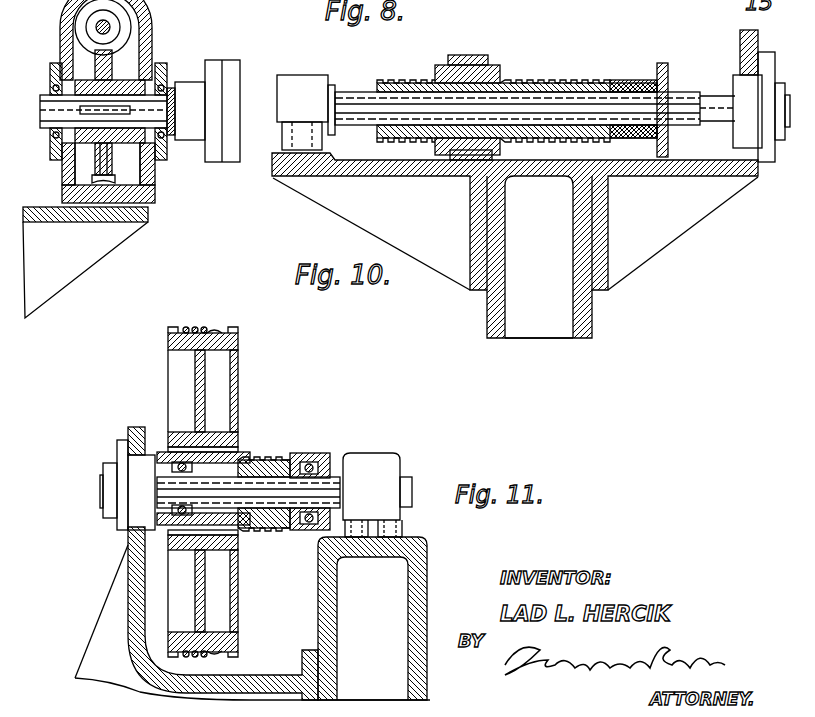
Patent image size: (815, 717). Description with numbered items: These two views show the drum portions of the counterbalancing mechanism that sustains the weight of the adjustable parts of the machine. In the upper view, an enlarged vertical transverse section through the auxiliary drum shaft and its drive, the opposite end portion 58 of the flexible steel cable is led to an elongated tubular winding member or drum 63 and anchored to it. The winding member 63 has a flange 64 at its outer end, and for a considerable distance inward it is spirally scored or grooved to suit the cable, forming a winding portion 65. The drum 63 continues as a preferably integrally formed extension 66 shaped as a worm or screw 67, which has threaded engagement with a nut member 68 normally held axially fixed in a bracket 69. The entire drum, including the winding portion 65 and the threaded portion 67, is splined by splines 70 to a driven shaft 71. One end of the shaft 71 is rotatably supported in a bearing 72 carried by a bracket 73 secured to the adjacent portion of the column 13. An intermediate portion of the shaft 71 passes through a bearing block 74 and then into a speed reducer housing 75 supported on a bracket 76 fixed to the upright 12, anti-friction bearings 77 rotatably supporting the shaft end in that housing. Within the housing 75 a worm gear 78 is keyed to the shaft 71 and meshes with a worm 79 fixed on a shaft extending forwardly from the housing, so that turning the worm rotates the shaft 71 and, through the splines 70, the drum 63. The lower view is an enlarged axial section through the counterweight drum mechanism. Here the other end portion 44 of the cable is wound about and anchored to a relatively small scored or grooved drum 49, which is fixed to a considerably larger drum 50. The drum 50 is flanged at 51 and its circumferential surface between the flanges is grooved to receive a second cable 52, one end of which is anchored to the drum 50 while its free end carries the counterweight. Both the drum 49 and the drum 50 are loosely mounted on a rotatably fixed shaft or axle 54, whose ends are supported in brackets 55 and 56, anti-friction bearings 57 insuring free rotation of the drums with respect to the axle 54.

In FIG. 10, the column 13 is at (597, 327).
In FIG. 11, the upright 12 is at (427, 682).
In FIG. 11, the end portion of the cable 44 is at (248, 458).
In FIG. 11, the scored or grooved drum 49 is at (270, 458).
In FIG. 11, the drum 50 is at (240, 343).
In FIG. 11, the flanges 51 is at (170, 327).
In FIG. 11, the second cable 52 is at (198, 327).
In FIG. 11, the shaft or axle 54 is at (100, 485).
In FIG. 11, the bracket 55 is at (128, 571).
In FIG. 11, the bracket 56 is at (390, 456).
In FIG. 11, the anti-friction bearings 57 is at (180, 462).
In FIG. 10, the opposite end portion of the cable 58 is at (632, 78).
In FIG. 10, the tubular winding member or drum 63 is at (592, 78).
In FIG. 10, the flange 64 is at (662, 63).
In FIG. 10, the winding portion 65 is at (560, 80).
In FIG. 10, the extension 66 is at (515, 80).
In FIG. 10, the worm or screw 67 is at (400, 80).
In FIG. 10, the nut member 68 is at (440, 65).
In FIG. 10, the bracket 69 is at (462, 55).
In FIG. 10, the splines 70 is at (683, 100).
In FIG. 10, the driven shaft 71 is at (337, 108).
In FIG. 10, the bearing 72 is at (736, 80).
In FIG. 10, the bracket 73 is at (675, 228).
In FIG. 10, the bearing block 74 is at (303, 80).
In FIG. 10, the speed reducer housing 75 is at (158, 36).
In FIG. 10, the bracket 76 is at (52, 288).
In FIG. 10, the anti-friction bearings 77 is at (58, 58).
In FIG. 10, the worm gear 78 is at (95, 168).
In FIG. 10, the worm 79 is at (88, 22).